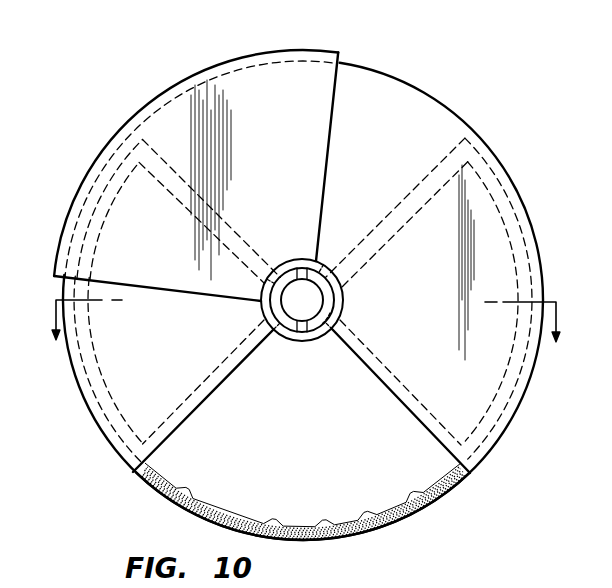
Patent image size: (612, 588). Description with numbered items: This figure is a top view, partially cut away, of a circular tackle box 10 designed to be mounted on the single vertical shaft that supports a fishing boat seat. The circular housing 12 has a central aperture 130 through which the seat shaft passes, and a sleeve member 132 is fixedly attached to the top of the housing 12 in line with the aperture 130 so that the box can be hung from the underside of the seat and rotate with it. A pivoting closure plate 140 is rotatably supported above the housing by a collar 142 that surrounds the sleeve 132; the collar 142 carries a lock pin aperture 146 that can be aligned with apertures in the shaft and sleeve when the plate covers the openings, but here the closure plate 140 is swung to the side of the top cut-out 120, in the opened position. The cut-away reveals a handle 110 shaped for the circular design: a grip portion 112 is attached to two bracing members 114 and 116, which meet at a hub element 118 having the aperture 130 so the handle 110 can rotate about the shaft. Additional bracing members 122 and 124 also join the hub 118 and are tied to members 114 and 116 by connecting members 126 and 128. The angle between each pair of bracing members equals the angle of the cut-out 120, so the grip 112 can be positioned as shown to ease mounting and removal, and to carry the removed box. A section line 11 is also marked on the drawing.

The tackle box 10 is at (313, 301).
The section line 11- 11 is at (306, 333).
The housing 12 is at (376, 178).
The handle 110 is at (324, 523).
The grip portion 112 is at (350, 536).
The bracing member 114 is at (417, 388).
The bracing member 116 is at (200, 392).
The hub element 118 is at (318, 268).
The cut-out 120 is at (415, 421).
The additional bracing member 122 is at (402, 223).
The additional bracing member 124 is at (244, 246).
The connecting member 126 is at (541, 262).
The connecting member 128 is at (98, 234).
The central aperture 130 is at (298, 268).
The sleeve member 132 is at (322, 343).
The closure plate 140 is at (304, 96).
The collar 142 is at (283, 343).
The lock pin aperture 146 is at (342, 315).